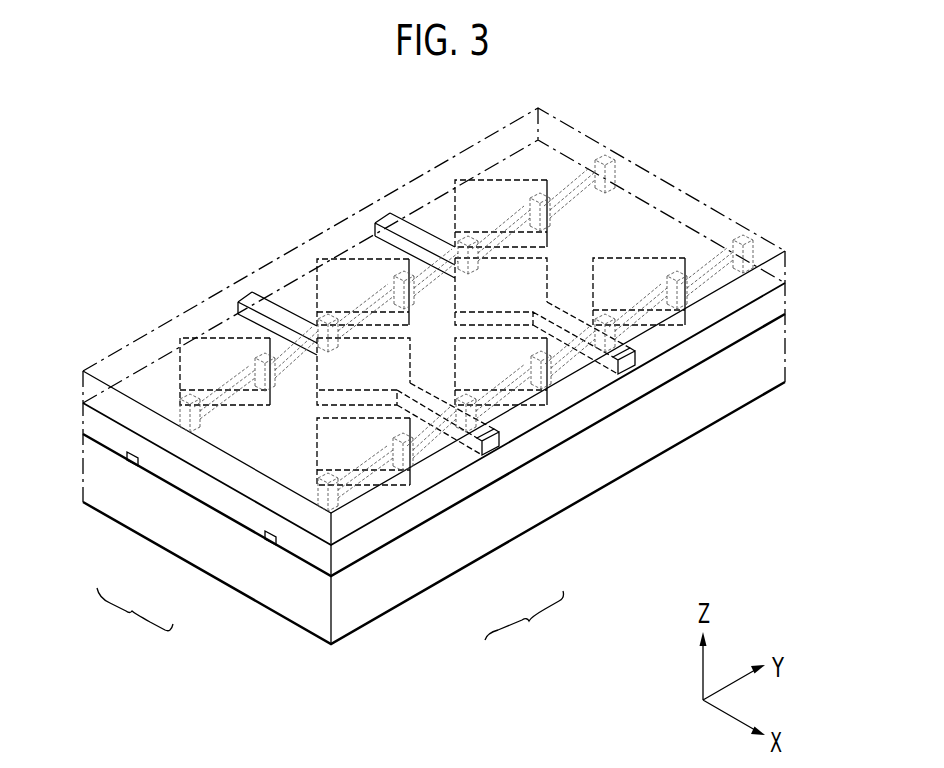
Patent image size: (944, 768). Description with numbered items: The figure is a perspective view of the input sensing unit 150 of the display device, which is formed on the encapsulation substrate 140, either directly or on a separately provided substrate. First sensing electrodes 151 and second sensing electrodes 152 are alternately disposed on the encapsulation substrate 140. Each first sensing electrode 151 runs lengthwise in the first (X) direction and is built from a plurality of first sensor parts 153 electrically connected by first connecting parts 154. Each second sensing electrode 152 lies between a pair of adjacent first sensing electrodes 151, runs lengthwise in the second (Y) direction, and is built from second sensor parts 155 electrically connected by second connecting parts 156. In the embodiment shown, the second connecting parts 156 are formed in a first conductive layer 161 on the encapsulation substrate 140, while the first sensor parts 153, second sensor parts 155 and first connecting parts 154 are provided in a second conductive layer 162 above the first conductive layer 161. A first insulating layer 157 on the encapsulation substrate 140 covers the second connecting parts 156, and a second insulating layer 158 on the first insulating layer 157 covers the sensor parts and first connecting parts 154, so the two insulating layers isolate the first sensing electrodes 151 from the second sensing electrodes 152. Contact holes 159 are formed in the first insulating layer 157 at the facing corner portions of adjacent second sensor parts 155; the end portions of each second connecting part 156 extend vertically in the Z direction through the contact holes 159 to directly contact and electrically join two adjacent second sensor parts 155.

The encapsulation substrate 140 is at (787, 350).
The input sensing unit 150 is at (718, 170).
The first sensing electrode 151 is at (133, 614).
The second sensing electrode 152 is at (526, 622).
The first sensor part 153 is at (333, 377).
The first connecting part 154 is at (303, 343).
The second sensor part 155 is at (367, 462).
The second connecting part 156 is at (420, 450).
The first insulating layer 157 is at (787, 297).
The second insulating layer 158 is at (787, 258).
The contact hole 159 is at (473, 410).
The first conductive layer 161 is at (128, 462).
The second conductive layer 162 is at (492, 445).